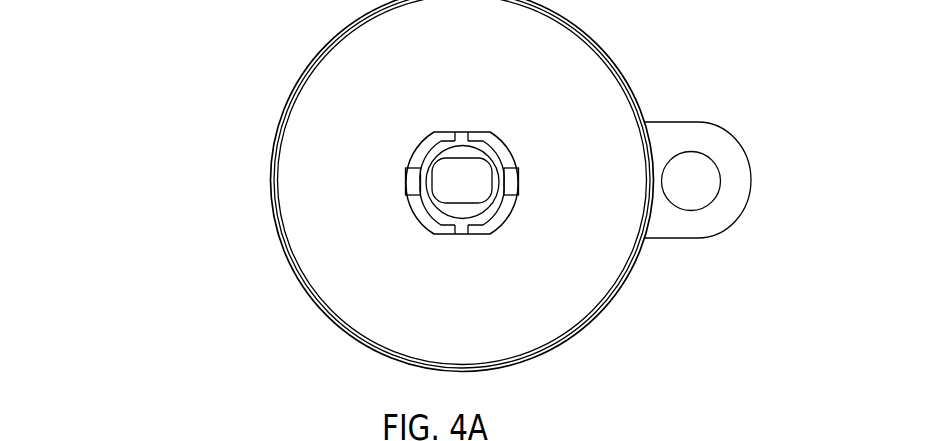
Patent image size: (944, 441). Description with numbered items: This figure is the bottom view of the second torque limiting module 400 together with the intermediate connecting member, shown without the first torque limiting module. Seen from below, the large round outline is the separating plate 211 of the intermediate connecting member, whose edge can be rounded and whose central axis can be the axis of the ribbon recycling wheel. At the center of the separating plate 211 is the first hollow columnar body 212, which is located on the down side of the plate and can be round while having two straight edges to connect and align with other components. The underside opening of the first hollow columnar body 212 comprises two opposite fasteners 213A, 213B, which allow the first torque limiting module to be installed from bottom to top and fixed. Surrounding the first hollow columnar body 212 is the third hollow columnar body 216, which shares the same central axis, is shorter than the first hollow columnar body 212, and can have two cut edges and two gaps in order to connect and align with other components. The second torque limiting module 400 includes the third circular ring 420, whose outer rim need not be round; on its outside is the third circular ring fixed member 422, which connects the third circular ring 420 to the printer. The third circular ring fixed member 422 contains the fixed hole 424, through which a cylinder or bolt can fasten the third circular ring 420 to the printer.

The second torque limiting module 400 is at (209, 60).
The separating plate 211 is at (363, 337).
The third hollow columnar body 216 is at (433, 131).
The fastener 213A is at (522, 182).
The fastener 213B is at (405, 183).
The first hollow columnar body 212 is at (482, 223).
The third circular ring 420 is at (713, 255).
The third circular ring fixed member 422 is at (700, 238).
The fixed hole 424 is at (697, 153).